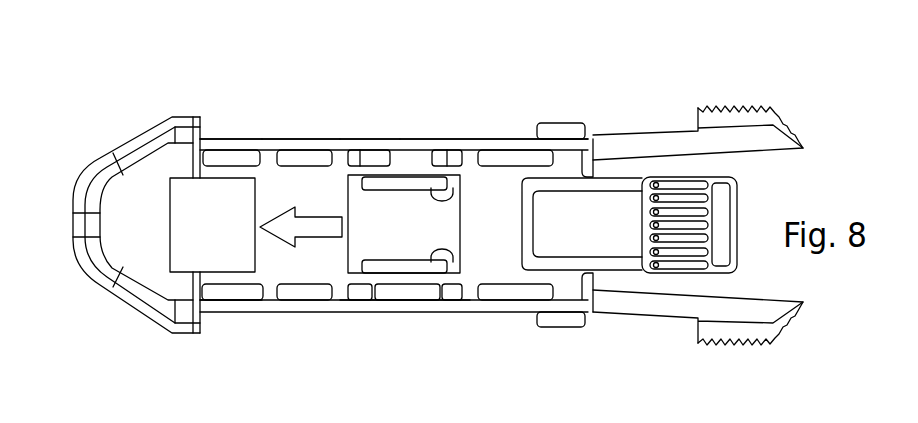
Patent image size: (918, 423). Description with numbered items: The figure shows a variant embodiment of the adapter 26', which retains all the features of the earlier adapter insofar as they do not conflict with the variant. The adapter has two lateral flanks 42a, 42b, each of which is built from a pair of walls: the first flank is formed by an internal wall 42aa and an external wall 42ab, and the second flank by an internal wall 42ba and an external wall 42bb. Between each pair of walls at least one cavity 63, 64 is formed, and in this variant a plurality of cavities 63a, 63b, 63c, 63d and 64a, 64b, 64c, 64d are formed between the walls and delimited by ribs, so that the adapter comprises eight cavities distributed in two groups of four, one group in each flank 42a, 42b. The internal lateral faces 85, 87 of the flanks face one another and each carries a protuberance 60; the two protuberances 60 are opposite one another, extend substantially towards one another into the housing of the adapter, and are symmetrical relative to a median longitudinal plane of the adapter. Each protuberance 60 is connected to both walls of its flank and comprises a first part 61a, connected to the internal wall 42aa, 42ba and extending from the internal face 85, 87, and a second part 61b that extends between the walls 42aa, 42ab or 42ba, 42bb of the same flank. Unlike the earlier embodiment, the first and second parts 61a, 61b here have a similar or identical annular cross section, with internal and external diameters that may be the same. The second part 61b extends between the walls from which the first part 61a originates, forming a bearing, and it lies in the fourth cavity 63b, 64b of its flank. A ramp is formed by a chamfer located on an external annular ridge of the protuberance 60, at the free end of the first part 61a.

The adapter 26' is at (705, 203).
The lateral flank 42a is at (220, 293).
The internal wall 42aa is at (357, 277).
The external wall 42ab is at (513, 300).
The lateral flank 42b is at (231, 150).
The internal wall 42ba is at (453, 167).
The external wall 42bb is at (268, 150).
The protuberance 60 is at (409, 257).
The first part of the protuberance 61a is at (383, 180).
The second part of the protuberance 61b is at (378, 150).
The cavity 63 is at (210, 131).
The cavity 63a is at (518, 157).
The fourth cavity 63b is at (360, 165).
The cavity 63c is at (320, 139).
The cavity 63d is at (249, 139).
The cavity 64 is at (78, 263).
The cavity 64a is at (553, 317).
The fourth cavity 64b is at (360, 290).
The cavity 64c is at (292, 293).
The cavity 64d is at (208, 328).
The internal lateral face 85 is at (432, 265).
The internal lateral face 87 is at (428, 176).